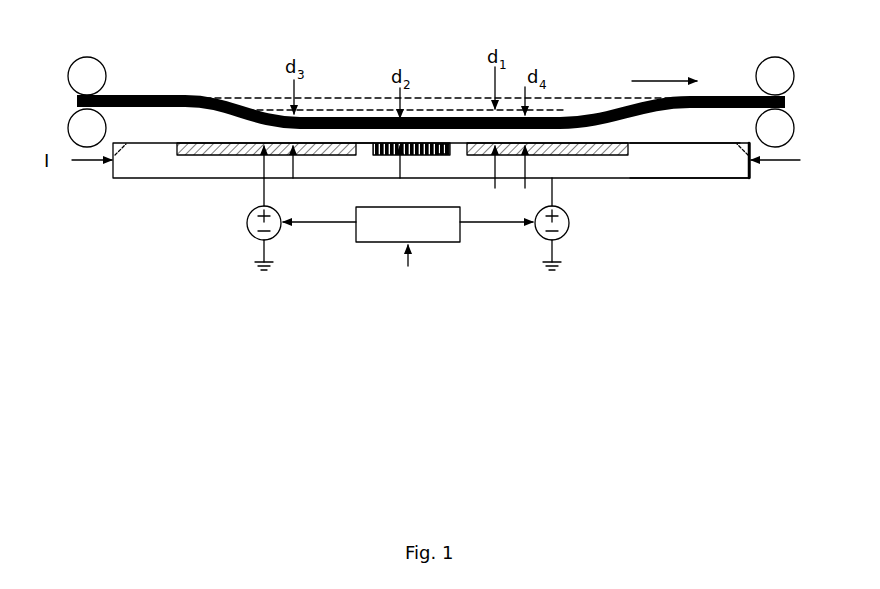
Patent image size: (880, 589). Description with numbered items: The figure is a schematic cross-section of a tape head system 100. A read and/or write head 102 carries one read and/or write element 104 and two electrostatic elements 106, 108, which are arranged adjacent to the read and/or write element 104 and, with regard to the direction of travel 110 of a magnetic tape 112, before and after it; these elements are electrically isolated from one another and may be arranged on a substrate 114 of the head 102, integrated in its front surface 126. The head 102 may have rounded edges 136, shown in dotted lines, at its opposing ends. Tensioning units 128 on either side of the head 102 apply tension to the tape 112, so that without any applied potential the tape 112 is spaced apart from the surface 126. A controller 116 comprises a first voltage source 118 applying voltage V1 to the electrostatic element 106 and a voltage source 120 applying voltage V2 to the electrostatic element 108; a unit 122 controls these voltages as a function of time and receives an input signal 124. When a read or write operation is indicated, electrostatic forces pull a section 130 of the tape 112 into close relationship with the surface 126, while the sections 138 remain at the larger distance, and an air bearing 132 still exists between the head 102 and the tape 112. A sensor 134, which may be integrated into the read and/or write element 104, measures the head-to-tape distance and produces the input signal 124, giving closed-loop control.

The tape head system 100 is at (108, 326).
The read and/or write head 102 is at (113, 168).
The read and/or write element 104 is at (418, 154).
The electrostatic element 106 is at (203, 156).
The electrostatic element 108 is at (610, 153).
The direction of travel 110 is at (652, 81).
The magnetic tape 112 is at (162, 95).
The substrate 114 is at (725, 168).
The controller 116 is at (405, 376).
The first voltage source 118 is at (279, 228).
The voltage source 120 is at (564, 237).
The unit 122 is at (445, 243).
The input signal 124 is at (408, 266).
The front surface 126 is at (689, 141).
The tensioning units 128 is at (62, 58).
The section 130 is at (607, 41).
The air bearing 132 is at (172, 133).
The sensor 134 is at (445, 152).
The rounded edges 136 is at (122, 145).
The sections 138 is at (213, 41).